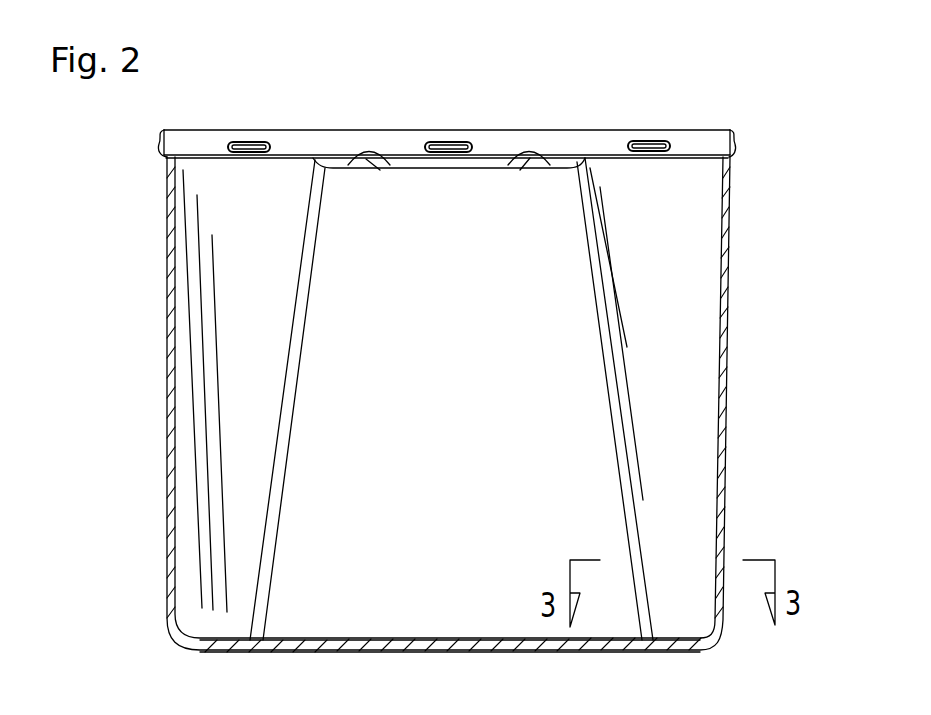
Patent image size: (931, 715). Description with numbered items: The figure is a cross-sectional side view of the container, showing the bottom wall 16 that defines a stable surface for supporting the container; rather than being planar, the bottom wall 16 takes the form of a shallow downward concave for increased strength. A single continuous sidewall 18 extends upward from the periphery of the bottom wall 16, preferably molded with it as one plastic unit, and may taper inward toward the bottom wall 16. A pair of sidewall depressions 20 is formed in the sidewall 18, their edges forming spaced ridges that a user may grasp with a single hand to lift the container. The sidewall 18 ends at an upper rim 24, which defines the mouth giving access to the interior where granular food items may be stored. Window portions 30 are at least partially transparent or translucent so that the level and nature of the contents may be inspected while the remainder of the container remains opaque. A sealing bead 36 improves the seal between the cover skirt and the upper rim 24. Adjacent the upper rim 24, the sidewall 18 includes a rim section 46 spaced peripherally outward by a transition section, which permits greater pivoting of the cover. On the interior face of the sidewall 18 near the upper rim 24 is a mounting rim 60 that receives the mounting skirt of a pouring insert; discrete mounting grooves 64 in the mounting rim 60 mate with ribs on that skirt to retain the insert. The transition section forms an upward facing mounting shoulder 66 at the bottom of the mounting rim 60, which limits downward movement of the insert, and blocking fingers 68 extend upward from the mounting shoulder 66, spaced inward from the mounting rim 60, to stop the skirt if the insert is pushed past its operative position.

The bottom wall 16 is at (390, 637).
The sidewall 18 is at (683, 368).
The sidewall depressions 20 is at (515, 433).
The upper rim 24 is at (297, 143).
The window portions 30 is at (727, 436).
The sealing bead 36 is at (737, 155).
The rim section 46 is at (163, 133).
The mounting rim 60 is at (557, 143).
The mounting grooves 64 is at (239, 145).
The mounting shoulder 66 is at (708, 154).
The blocking fingers 68 is at (523, 157).